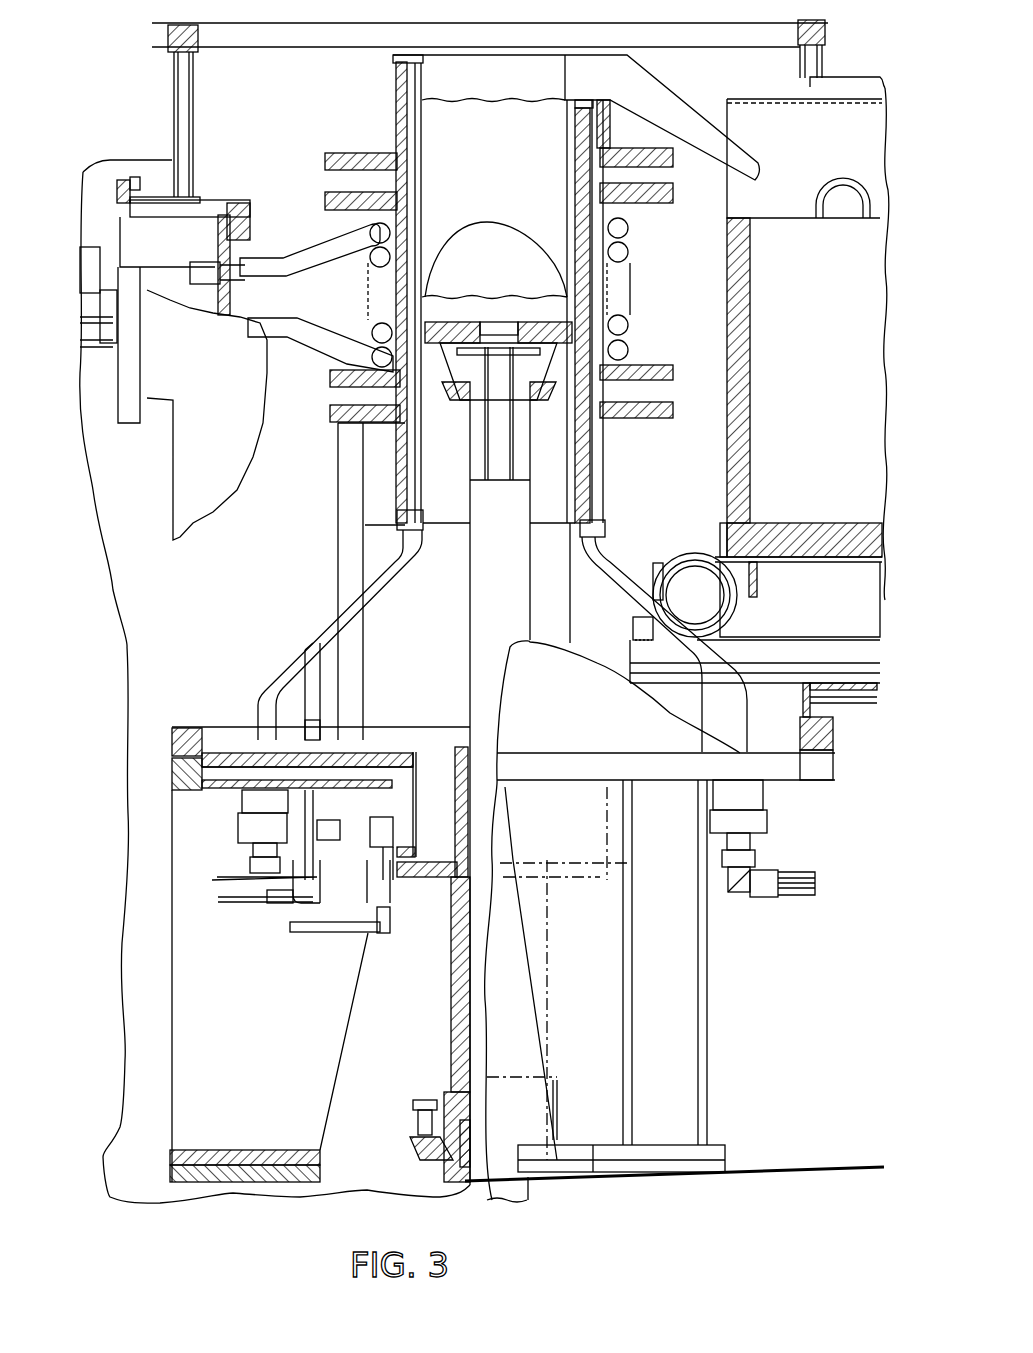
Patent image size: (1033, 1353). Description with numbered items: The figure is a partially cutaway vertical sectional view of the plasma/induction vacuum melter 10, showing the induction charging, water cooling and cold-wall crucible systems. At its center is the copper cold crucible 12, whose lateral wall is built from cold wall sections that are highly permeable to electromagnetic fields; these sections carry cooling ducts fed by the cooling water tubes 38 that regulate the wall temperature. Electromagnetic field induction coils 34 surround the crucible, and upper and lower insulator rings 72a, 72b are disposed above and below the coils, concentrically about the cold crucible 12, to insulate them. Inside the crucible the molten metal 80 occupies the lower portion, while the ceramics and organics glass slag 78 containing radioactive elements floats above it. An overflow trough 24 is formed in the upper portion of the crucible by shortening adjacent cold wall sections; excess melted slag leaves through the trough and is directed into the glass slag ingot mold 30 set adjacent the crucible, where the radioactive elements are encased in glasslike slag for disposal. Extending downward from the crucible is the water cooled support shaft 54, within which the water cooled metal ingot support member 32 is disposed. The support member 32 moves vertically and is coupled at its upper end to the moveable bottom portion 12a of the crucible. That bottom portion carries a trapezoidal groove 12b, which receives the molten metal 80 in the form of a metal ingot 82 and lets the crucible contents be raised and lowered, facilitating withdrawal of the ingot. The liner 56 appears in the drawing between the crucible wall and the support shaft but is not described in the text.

The plasma/induction vacuum melter 10 is at (98, 720).
The cold crucible 12 is at (395, 72).
The moveable bottom portion 12a is at (440, 322).
The trapezoidal groove 12b is at (500, 480).
The overflow trough 24 is at (672, 100).
The glass slag ingot mold 30 is at (727, 322).
The metal ingot support member 32 is at (480, 465).
The electromagnetic field induction coils 34 is at (365, 232).
The cooling water tubes 38 is at (277, 690).
The support shaft 54 is at (483, 630).
The liner 56 is at (360, 567).
The upper insulator ring 72a is at (330, 190).
The lower insulator ring 72b is at (330, 375).
The ceramics and organics glass slag 78 is at (512, 177).
The molten metal 80 is at (516, 275).
The metal ingot 82 is at (498, 335).